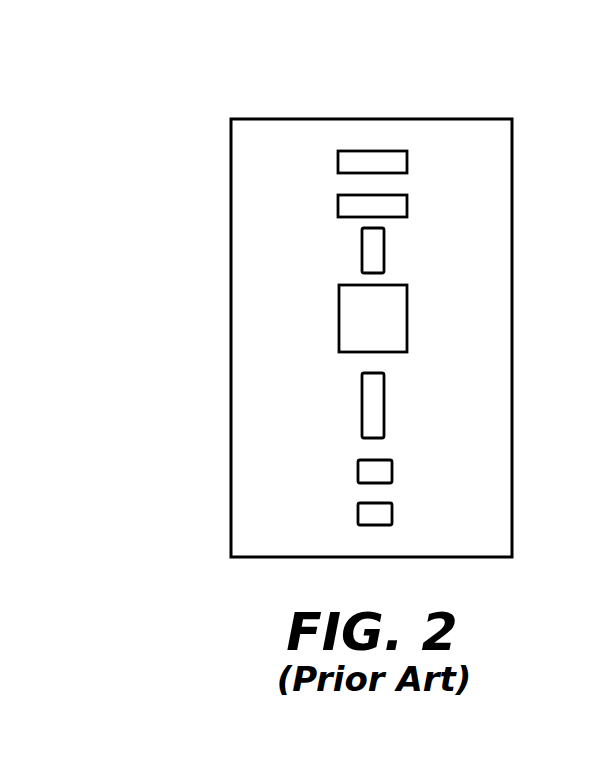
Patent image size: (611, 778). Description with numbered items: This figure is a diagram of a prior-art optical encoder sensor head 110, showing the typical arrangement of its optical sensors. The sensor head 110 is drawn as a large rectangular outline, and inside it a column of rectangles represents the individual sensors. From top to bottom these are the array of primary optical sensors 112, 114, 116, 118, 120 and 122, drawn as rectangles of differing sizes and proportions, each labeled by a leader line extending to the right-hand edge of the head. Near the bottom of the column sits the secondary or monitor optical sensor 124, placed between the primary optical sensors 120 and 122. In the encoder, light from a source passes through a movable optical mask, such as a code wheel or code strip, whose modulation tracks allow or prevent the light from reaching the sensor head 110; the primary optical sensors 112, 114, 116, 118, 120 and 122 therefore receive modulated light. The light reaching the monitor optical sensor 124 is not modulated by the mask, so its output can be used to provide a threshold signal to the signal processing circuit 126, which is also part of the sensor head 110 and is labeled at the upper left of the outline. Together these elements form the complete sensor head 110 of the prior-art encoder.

The sensor head 110 is at (472, 98).
The primary optical sensor 112 is at (407, 162).
The primary optical sensor 114 is at (407, 206).
The primary optical sensor 116 is at (384, 250).
The primary optical sensor 118 is at (407, 318).
The primary optical sensor 120 is at (384, 405).
The primary optical sensor 122 is at (392, 514).
The monitor optical sensor 124 is at (392, 472).
The signal processing circuit 126 is at (330, 119).